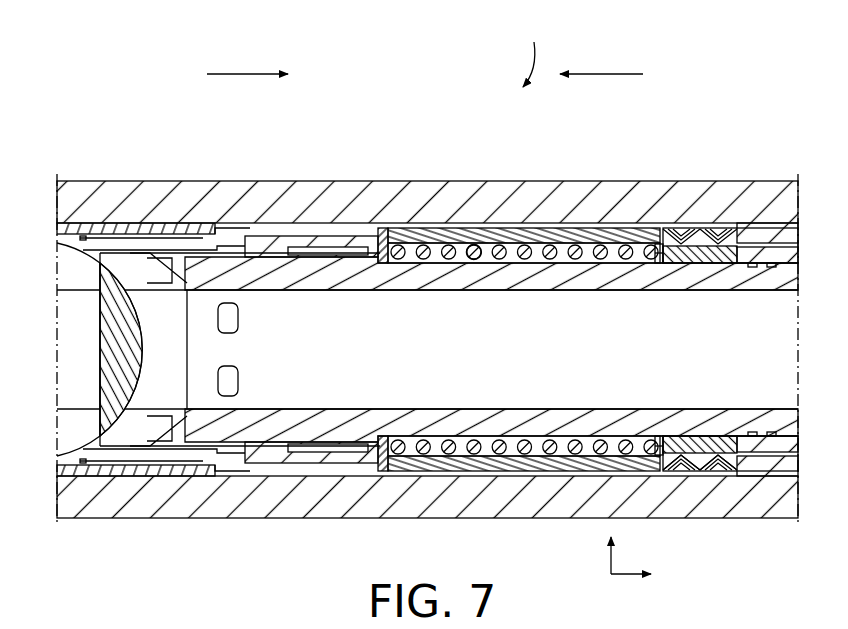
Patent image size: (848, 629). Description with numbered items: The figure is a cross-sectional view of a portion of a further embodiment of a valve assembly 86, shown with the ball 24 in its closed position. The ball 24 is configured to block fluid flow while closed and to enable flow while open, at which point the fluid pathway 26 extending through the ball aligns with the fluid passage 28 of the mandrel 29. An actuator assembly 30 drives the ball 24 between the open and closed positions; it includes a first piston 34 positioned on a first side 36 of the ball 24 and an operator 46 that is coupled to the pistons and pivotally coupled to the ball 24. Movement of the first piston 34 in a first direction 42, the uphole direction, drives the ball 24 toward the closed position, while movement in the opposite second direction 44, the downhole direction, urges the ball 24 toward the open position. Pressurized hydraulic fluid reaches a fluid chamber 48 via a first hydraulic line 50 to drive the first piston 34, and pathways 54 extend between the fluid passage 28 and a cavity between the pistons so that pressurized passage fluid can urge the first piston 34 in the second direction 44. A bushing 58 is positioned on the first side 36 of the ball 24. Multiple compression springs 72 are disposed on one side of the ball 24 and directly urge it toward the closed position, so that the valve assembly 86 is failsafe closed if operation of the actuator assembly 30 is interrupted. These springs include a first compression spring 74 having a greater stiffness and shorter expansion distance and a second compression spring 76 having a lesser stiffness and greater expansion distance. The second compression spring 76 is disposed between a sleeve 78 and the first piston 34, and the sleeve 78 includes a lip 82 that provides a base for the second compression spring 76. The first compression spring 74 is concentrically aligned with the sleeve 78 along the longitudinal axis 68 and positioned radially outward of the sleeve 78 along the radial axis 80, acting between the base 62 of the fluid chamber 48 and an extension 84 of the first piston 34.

The ball 24 is at (113, 351).
The fluid pathway 26 is at (100, 316).
The fluid passage 28 is at (350, 290).
The mandrel 29 is at (556, 278).
The actuator assembly 30 is at (241, 164).
The first piston 34 is at (306, 232).
The first side 36 is at (363, 159).
The first direction 42 is at (606, 74).
The second direction 44 is at (243, 74).
The operator 46 is at (70, 240).
The fluid chamber 48 is at (462, 242).
The first hydraulic line 50 is at (760, 240).
The pathway 54 is at (240, 316).
The bushing 58 is at (130, 432).
The base 62 is at (739, 252).
The longitudinal axis 68 is at (627, 574).
The multiple compression springs 72 is at (593, 166).
The first compression spring 74 is at (686, 240).
The second compression spring 76 is at (478, 259).
The sleeve 78 is at (690, 442).
The radial axis 80 is at (611, 560).
The lip 82 is at (659, 263).
The extension 84 is at (514, 234).
The valve assembly 86 is at (532, 52).